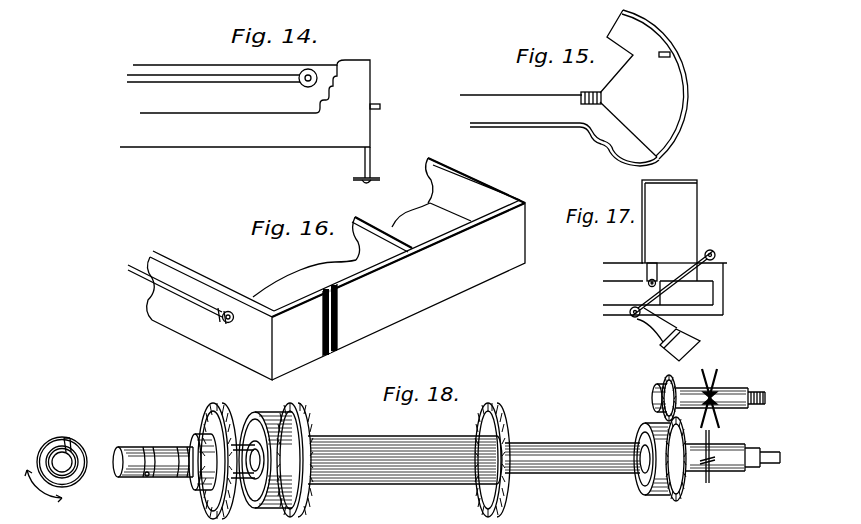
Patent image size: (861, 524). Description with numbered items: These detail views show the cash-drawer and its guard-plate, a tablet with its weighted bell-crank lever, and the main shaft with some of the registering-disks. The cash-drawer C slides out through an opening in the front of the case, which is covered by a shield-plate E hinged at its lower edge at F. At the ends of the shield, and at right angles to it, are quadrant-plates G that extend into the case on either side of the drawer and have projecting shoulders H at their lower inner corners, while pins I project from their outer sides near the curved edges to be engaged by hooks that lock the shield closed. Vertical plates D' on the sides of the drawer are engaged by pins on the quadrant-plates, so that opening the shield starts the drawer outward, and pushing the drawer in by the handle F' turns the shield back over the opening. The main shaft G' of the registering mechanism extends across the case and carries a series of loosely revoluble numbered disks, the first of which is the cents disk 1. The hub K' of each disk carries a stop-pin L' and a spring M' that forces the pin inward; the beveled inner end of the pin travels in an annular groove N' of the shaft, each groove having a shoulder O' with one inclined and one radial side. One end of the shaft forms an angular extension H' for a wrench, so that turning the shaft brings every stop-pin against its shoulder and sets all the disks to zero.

In FIG. 14, the cash-drawer C is at (176, 93).
In FIG. 16, the cash-drawer C is at (336, 269).
In FIG. 14, the hinge F is at (245, 103).
In FIG. 14, the handle F' is at (222, 84).
In FIG. 15, the handle F' is at (559, 129).
In FIG. 16, the handle F' is at (181, 294).
In FIG. 14, the pin I is at (375, 114).
In FIG. 14, the projecting shoulder H is at (372, 165).
In FIG. 15, the projecting shoulder H is at (625, 35).
In FIG. 15, the shield-plate E is at (670, 55).
In FIG. 15, the quadrant-plate G is at (644, 84).
In FIG. 16, the vertical plate D' is at (340, 320).
In FIG. 18, the annular groove N' is at (82, 456).
In FIG. 18, the stop-pin L' is at (73, 434).
In FIG. 18, the hub K' is at (131, 466).
In FIG. 18, the shoulder O' is at (108, 483).
In FIG. 18, the spring M' is at (107, 463).
In FIG. 18, the main shaft G' is at (360, 466).
In FIG. 18, the disk 1 is at (259, 414).
In FIG. 18, the angular extension H' is at (733, 467).